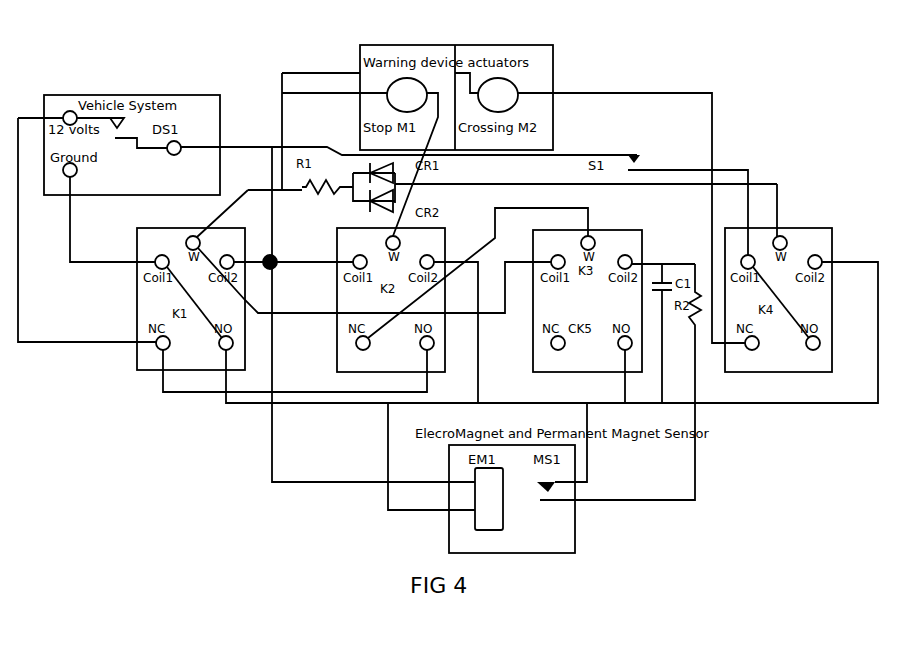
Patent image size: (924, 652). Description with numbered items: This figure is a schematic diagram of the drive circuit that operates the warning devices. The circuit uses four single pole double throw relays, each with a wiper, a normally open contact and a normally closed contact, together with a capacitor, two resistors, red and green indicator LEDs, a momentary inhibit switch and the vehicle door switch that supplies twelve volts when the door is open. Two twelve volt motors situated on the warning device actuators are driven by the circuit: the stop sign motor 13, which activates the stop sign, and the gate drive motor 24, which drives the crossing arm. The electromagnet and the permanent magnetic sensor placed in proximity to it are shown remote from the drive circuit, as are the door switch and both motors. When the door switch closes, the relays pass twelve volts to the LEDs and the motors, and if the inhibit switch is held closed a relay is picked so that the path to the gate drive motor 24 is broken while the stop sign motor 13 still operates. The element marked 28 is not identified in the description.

The stop sign motor 13 is at (388, 93).
The gate drive motor 24 is at (515, 84).
The electromagnet EM1 28 is at (489, 522).